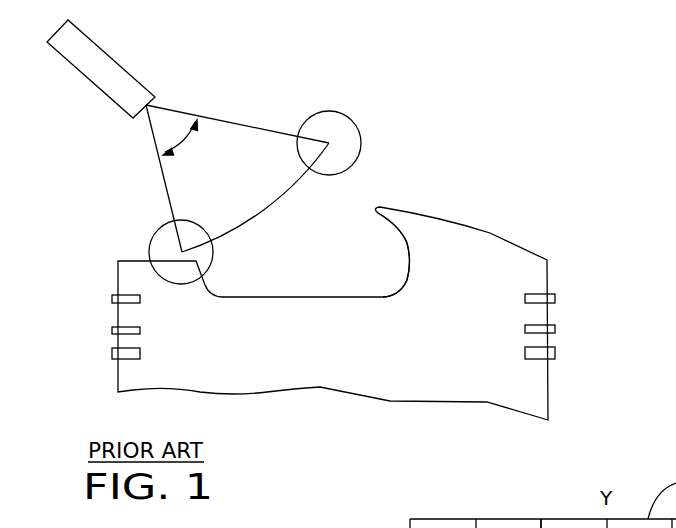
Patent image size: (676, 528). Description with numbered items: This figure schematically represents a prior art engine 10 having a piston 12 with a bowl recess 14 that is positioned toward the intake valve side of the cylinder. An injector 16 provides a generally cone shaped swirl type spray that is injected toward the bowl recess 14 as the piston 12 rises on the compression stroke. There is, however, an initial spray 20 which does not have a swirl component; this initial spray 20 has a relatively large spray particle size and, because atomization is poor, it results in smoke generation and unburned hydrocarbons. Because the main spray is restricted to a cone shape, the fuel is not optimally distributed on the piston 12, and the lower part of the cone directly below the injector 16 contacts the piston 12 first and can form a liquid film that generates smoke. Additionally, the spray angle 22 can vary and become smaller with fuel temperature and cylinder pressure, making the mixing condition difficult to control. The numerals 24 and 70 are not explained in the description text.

The prior art engine 10 is at (447, 72).
The piston 12 is at (535, 277).
The bowl recess 14 is at (378, 267).
The injector 16 is at (110, 70).
The initial spray 20 is at (275, 205).
The spray angle 22 is at (200, 147).
The pivot 24 is at (158, 230).
The base 70 is at (557, 527).